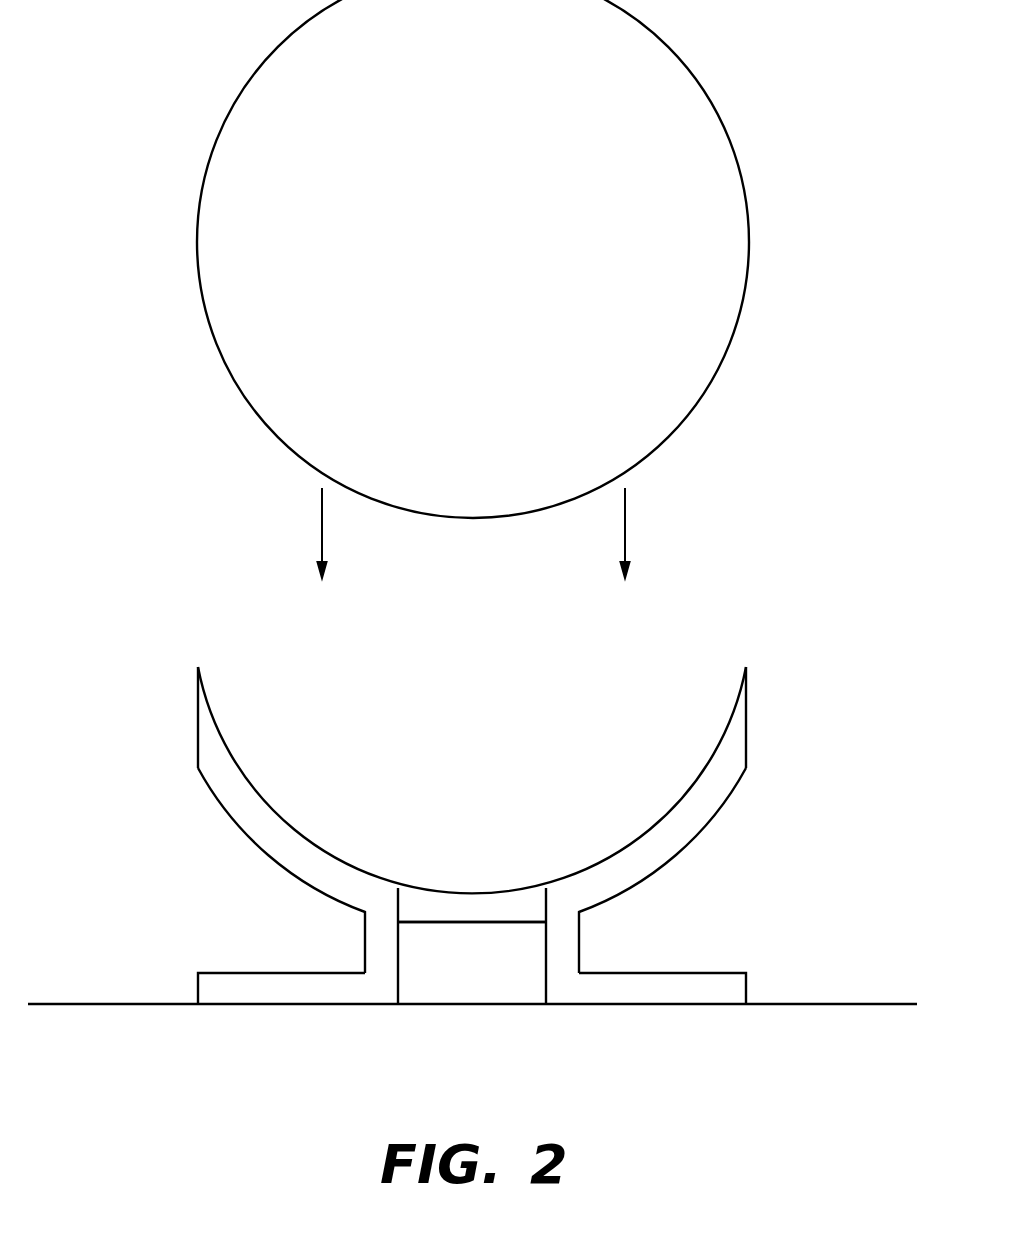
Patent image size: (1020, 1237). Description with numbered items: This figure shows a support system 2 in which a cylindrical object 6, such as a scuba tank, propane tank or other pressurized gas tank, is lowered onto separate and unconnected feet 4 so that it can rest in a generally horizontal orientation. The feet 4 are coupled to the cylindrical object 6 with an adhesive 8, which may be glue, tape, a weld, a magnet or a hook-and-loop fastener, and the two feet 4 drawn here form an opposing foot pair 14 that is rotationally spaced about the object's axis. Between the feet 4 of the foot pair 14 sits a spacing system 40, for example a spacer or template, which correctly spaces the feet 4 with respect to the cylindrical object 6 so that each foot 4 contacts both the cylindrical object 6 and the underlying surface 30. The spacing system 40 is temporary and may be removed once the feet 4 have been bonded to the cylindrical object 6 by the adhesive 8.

The support system 2 is at (824, 615).
The feet 4 is at (207, 990).
The cylindrical object 6 is at (482, 267).
The adhesive 8 is at (245, 773).
The foot pair 14 is at (563, 946).
The surface 30 is at (883, 1004).
The spacing system 40 is at (481, 903).